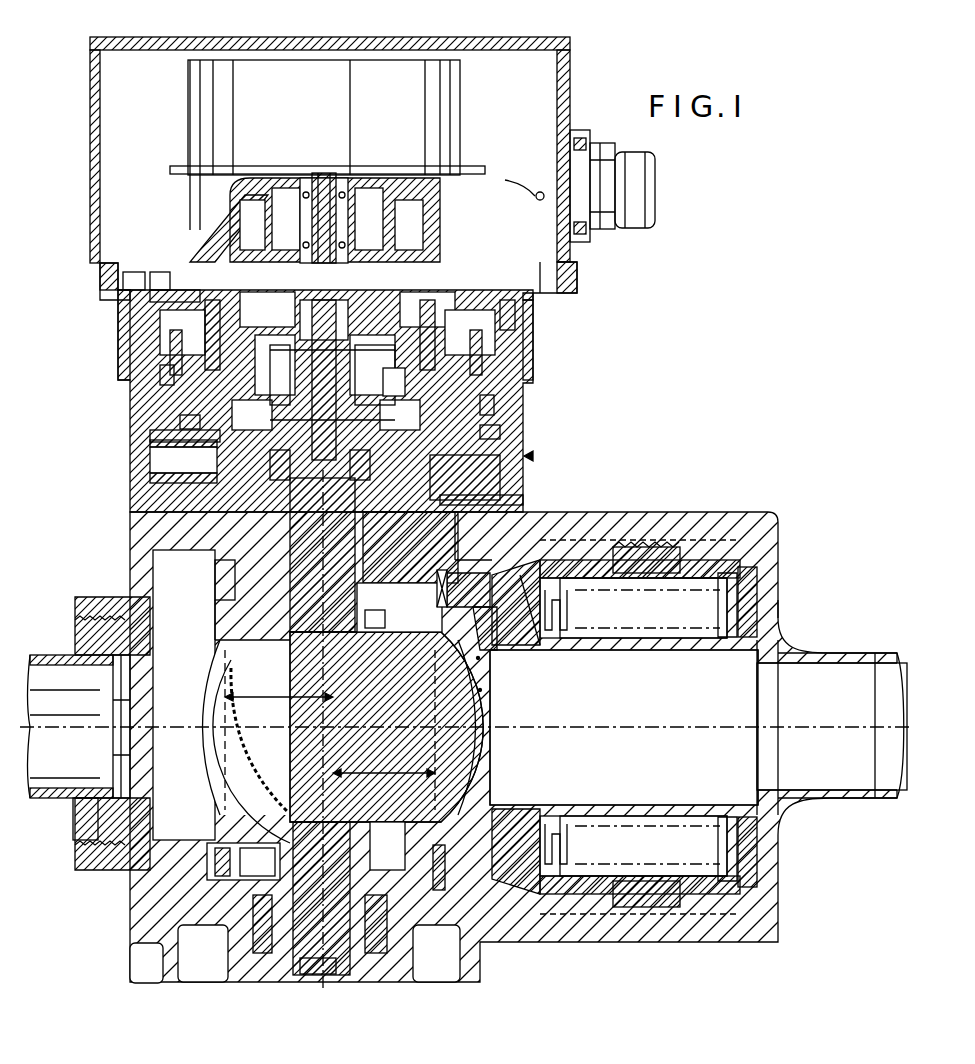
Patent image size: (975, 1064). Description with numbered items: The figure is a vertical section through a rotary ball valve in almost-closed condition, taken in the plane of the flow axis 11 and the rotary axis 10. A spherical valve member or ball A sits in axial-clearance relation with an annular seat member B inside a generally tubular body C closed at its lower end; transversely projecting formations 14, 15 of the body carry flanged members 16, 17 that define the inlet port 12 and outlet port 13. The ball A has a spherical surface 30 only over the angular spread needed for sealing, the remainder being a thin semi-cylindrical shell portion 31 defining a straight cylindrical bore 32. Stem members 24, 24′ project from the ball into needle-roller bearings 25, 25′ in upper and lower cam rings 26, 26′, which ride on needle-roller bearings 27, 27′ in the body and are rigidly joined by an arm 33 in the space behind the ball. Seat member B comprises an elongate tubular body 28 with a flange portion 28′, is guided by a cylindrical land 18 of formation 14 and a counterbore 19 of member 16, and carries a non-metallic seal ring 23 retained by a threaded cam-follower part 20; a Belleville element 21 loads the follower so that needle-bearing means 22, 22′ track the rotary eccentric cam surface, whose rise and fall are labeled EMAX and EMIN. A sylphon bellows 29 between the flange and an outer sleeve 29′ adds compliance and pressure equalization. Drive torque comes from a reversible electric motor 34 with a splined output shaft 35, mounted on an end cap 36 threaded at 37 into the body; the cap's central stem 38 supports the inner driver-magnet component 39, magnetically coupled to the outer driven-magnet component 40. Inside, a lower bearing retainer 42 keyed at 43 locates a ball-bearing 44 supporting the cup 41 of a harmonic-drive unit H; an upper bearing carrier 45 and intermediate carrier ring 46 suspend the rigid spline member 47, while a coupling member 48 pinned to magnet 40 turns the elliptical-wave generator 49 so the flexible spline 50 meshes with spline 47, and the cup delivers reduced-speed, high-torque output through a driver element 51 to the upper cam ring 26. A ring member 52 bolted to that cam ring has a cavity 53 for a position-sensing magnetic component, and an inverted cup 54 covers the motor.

The fixed axis 10 is at (320, 705).
The transverse axis of fluid flow 11 is at (660, 737).
The inlet port 12 is at (795, 680).
The outlet port 13 is at (65, 680).
The transversely projecting formation 14 is at (638, 520).
The transversely projecting formation 15 is at (112, 610).
The flanged inlet-port member 16 is at (780, 600).
The flanged member 17 is at (85, 812).
The cylindrical land 18 is at (560, 514).
The cylindrical counterbore 19 is at (740, 642).
The cam-follower part 20 is at (510, 600).
The Belleville element 21 is at (700, 592).
The needle-bearing means 22 is at (447, 596).
The lower bearing 22′ is at (440, 890).
The seal ring 23 is at (440, 625).
The stem or bearing member 24 is at (150, 575).
The stem or bearing member 24′ is at (312, 975).
The needle-roller bearing 25 is at (523, 497).
The needle-roller bearing 25′ is at (340, 972).
The upper cam ring 26 is at (215, 570).
The lower cam ring 26′ is at (232, 830).
The needle-roller bearing 27 is at (183, 457).
The needle-roller bearing 27′ is at (245, 940).
The elongate tubular body 28 is at (676, 802).
The radially outward flange portion 28′ is at (530, 610).
The sylphon bellows 29 is at (568, 610).
The outer sleeve 29′ is at (650, 560).
The spherical surface 30 is at (478, 785).
The semi-cylindrical shell portion 31 is at (266, 772).
The cylindrical bore 32 is at (386, 680).
The arm 33 is at (192, 650).
The reversible electric motor 34 is at (385, 103).
The splined output shaft 35 is at (336, 185).
The end cap 36 is at (462, 272).
The threaded engagement 37 is at (533, 340).
The central stem 38 is at (322, 185).
The inner driver-magnet component 39 is at (282, 232).
The outer driven-magnet component 40 is at (245, 232).
The cup of harmonic-drive unit 41 is at (387, 387).
The lower bearing retainer 42 is at (185, 425).
The key 43 is at (170, 380).
The ball-bearing 44 is at (160, 440).
The upper bearing carrier 45 is at (200, 300).
The intermediate carrier ring 46 is at (530, 380).
The rigid spline member 47 is at (150, 305).
The drive-shaft coupling member 48 is at (320, 380).
The elliptical-wave generator 49 is at (528, 312).
The flexible spline 50 is at (168, 398).
The driver element 51 is at (261, 387).
The ring member 52 is at (500, 470).
The angularly localized cavity 53 is at (177, 473).
The inverted cup 54 is at (520, 47).
The spherical valve member A is at (480, 690).
The annular seat member B is at (478, 658).
The tubular body C is at (524, 456).
The harmonic-drive unit H is at (394, 382).
The minimum fall dimension EMIN is at (280, 695).
The maximum rise dimension EMAX is at (350, 783).